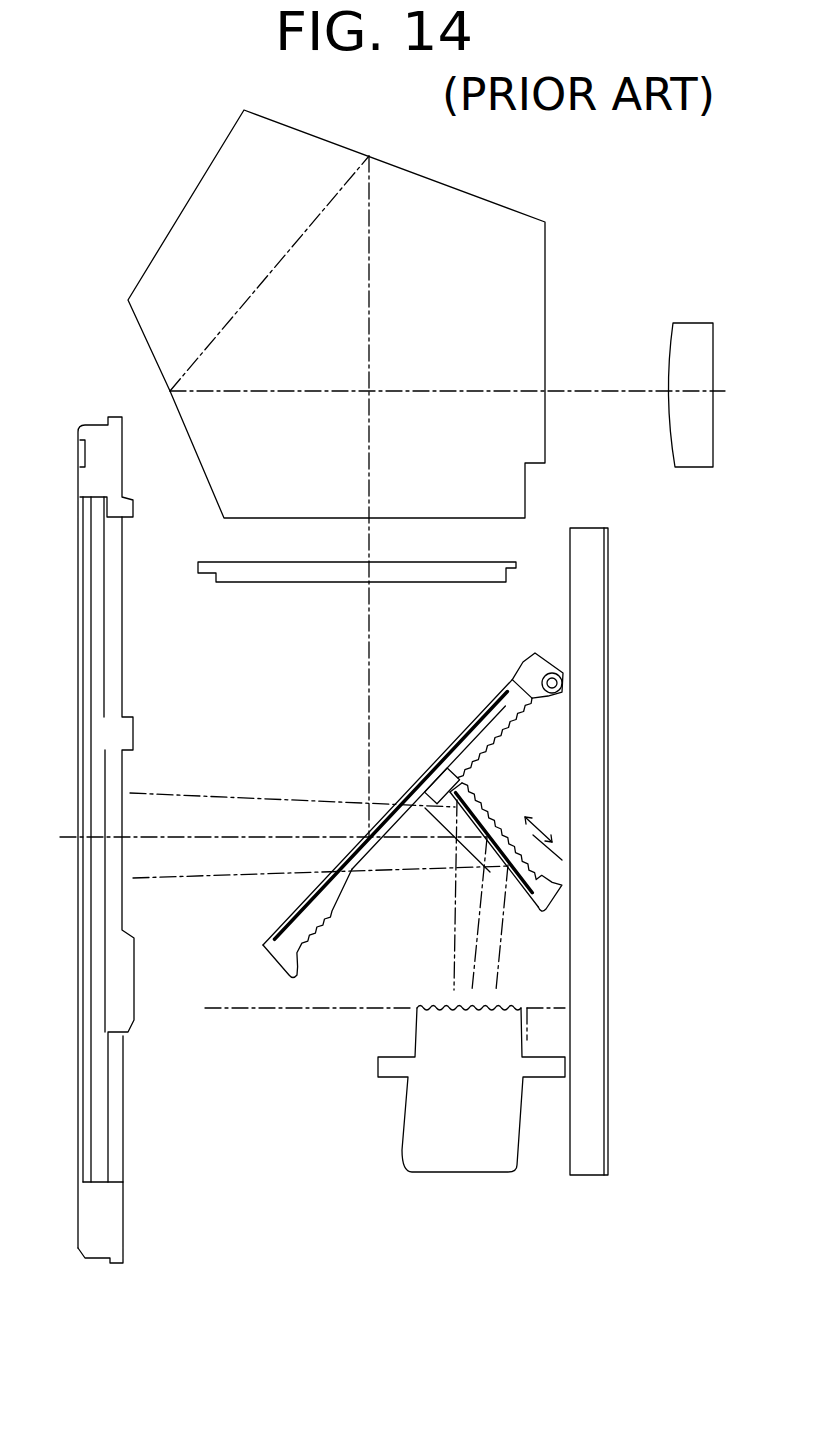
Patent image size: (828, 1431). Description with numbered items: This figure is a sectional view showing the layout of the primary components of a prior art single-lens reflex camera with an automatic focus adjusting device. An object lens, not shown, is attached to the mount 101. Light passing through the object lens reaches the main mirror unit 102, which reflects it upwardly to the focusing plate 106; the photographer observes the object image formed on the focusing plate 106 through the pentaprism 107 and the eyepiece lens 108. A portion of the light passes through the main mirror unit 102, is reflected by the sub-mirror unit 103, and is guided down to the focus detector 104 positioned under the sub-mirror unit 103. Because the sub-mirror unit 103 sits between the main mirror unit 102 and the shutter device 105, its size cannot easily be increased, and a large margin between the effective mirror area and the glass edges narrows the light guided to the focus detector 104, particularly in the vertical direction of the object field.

The mount 101 is at (98, 1247).
The main mirror unit 102 is at (477, 728).
The sub-mirror unit 103 is at (488, 817).
The focus detector 104 is at (455, 1165).
The shutter device 105 is at (598, 782).
The focusing plate 106 is at (465, 563).
The pentaprism 107 is at (535, 296).
The eyepiece lens 108 is at (685, 335).